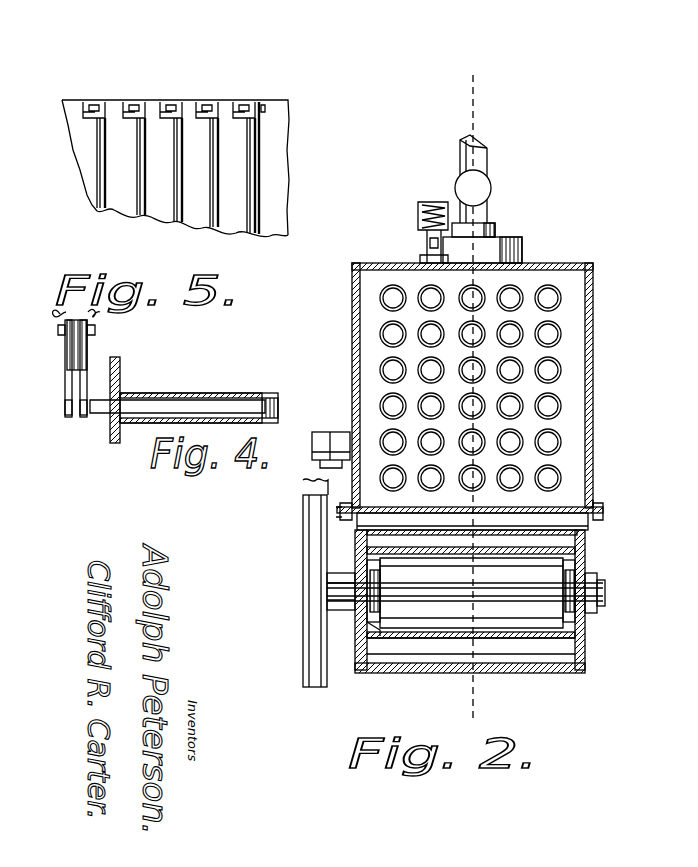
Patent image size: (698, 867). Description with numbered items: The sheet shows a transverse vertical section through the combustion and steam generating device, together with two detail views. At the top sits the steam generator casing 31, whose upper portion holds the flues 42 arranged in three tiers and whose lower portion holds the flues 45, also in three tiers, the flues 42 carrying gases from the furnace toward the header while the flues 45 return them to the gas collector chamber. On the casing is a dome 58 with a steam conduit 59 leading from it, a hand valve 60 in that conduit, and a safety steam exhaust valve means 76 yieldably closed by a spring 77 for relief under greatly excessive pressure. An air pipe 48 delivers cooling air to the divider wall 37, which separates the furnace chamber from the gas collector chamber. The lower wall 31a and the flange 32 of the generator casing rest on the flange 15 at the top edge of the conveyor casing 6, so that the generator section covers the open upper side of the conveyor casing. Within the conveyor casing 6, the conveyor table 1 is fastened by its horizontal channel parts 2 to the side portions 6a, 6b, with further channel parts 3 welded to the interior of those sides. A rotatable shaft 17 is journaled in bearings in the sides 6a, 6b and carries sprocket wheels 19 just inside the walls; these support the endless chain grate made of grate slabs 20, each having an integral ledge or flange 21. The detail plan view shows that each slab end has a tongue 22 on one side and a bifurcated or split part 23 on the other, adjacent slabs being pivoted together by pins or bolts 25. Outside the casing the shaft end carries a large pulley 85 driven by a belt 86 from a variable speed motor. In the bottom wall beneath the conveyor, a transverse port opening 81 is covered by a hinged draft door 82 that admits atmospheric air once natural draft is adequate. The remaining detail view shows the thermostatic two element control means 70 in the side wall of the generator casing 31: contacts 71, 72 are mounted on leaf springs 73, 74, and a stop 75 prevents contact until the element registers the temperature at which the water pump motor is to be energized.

In FIG. 2, the conveyor table 1 is at (456, 392).
In FIG. 2, the horizontal channel parts 2 is at (557, 560).
In FIG. 2, the horizontal channel parts 3 is at (385, 630).
In FIG. 2, the conveyor casing 6 is at (585, 670).
In FIG. 2, the conveyor casing side portion 6a is at (355, 650).
In FIG. 2, the conveyor casing side portion 6b is at (580, 626).
In FIG. 2, the flange 15 is at (603, 515).
In FIG. 2, the rotatable shaft 17 is at (603, 592).
In FIG. 2, the sprocket wheels 19 is at (380, 586).
In FIG. 5, the grate slabs 20 is at (116, 210).
In FIG. 2, the grate slabs 20 is at (510, 690).
In FIG. 5, the ledge or flange 21 is at (105, 138).
In FIG. 2, the ledge or flange 21 is at (577, 548).
In FIG. 5, the tongue 22 is at (282, 105).
In FIG. 5, the bifurcated or split part 23 is at (133, 100).
In FIG. 5, the pins or bolts 25 is at (258, 103).
In FIG. 4, the steam generator casing 31 is at (120, 362).
In FIG. 2, the steam generator casing 31 is at (352, 312).
In FIG. 2, the lower wall of steam generator casing 31a is at (593, 500).
In FIG. 2, the flange 32 is at (600, 508).
In FIG. 2, the divider or division wall 37 is at (590, 522).
In FIG. 2, the flues 42 is at (562, 298).
In FIG. 2, the flues 45 is at (560, 442).
In FIG. 2, the air pipe 48 is at (330, 432).
In FIG. 2, the dome 58 is at (522, 254).
In FIG. 2, the steam conduit 59 is at (487, 165).
In FIG. 2, the hand valve 60 is at (491, 190).
In FIG. 4, the thermostatic two element control means 70 is at (270, 398).
In FIG. 4, the contact 71 is at (82, 420).
In FIG. 4, the contact 72 is at (70, 420).
In FIG. 4, the leaf spring 73 is at (87, 398).
In FIG. 4, the leaf spring 74 is at (66, 376).
In FIG. 4, the stop 75 is at (87, 356).
In FIG. 2, the safety steam exhaust valve means 76 is at (425, 248).
In FIG. 2, the spring 77 is at (448, 212).
In FIG. 2, the transverse port opening 81 is at (380, 672).
In FIG. 2, the draft door 82 is at (560, 675).
In FIG. 2, the large pulley 85 is at (303, 620).
In FIG. 2, the belt 86 is at (304, 480).